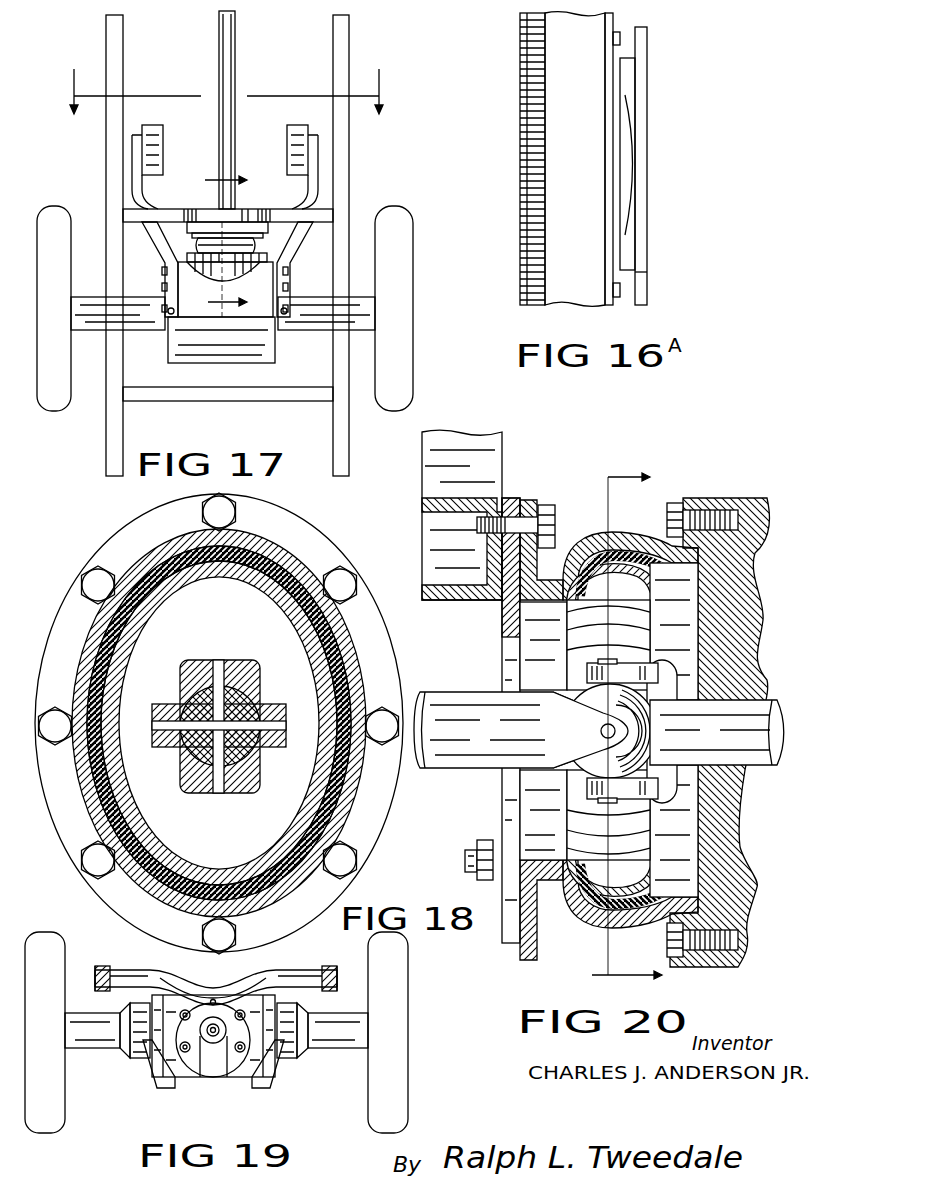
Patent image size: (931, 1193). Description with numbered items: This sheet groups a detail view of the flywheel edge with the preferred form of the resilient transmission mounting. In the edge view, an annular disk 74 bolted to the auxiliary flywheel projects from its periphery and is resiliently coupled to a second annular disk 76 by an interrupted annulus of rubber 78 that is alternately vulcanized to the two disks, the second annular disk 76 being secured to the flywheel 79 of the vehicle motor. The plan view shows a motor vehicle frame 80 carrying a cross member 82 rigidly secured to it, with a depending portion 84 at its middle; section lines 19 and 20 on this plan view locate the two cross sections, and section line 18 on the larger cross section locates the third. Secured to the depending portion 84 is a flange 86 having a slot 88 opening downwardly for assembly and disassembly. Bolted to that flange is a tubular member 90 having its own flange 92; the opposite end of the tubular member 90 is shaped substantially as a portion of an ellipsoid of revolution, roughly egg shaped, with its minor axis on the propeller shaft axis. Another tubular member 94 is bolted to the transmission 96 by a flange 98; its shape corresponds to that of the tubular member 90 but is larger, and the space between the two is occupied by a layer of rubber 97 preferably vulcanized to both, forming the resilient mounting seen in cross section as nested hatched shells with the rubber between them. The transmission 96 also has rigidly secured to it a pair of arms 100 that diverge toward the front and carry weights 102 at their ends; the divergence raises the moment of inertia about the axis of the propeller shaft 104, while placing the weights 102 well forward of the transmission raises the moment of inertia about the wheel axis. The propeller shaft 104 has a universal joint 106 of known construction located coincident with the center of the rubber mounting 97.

In FIG. 20, the section line 18— 18 is at (640, 726).
In FIG. 17, the section line 19— 19 is at (228, 103).
In FIG. 17, the section line 20— 20 is at (240, 243).
In FIG. 16A, the annular disk 74 is at (643, 78).
In FIG. 16A, the second annular disk 76 is at (612, 245).
In FIG. 16A, the interrupted annulus of rubber 78 is at (622, 162).
In FIG. 16A, the flywheel 79 is at (558, 118).
In FIG. 17, the motor vehicle frame 80 is at (340, 69).
In FIG. 19, the motor vehicle frame 80 is at (103, 967).
In FIG. 17, the cross member 82 is at (152, 214).
In FIG. 19, the cross member 82 is at (120, 977).
In FIG. 20, the cross member 82 is at (490, 448).
In FIG. 19, the depending portion 84 is at (233, 1000).
In FIG. 19, the flange 86 is at (190, 1057).
In FIG. 20, the flange 86 is at (512, 498).
In FIG. 19, the slot 88 is at (212, 1063).
In FIG. 18, the tubular member 90 is at (195, 873).
In FIG. 20, the tubular member 90 is at (592, 587).
In FIG. 20, the flange 92 is at (538, 502).
In FIG. 18, the tubular member 94 is at (167, 903).
In FIG. 20, the tubular member 94 is at (617, 542).
In FIG. 17, the transmission 96 is at (238, 353).
In FIG. 20, the transmission 96 is at (738, 500).
In FIG. 18, the layer of rubber 97 is at (280, 850).
In FIG. 20, the layer of rubber 97 is at (657, 887).
In FIG. 18, the flange 98 is at (377, 832).
In FIG. 20, the flange 98 is at (692, 498).
In FIG. 17, the arms 100 is at (162, 236).
In FIG. 19, the arms 100 is at (150, 1067).
In FIG. 17, the weights 102 is at (290, 131).
In FIG. 19, the weights 102 is at (293, 1015).
In FIG. 17, the propeller shaft 104 is at (232, 78).
In FIG. 19, the propeller shaft 104 is at (218, 1036).
In FIG. 20, the propeller shaft 104 is at (445, 757).
In FIG. 20, the universal joint 106 is at (617, 692).